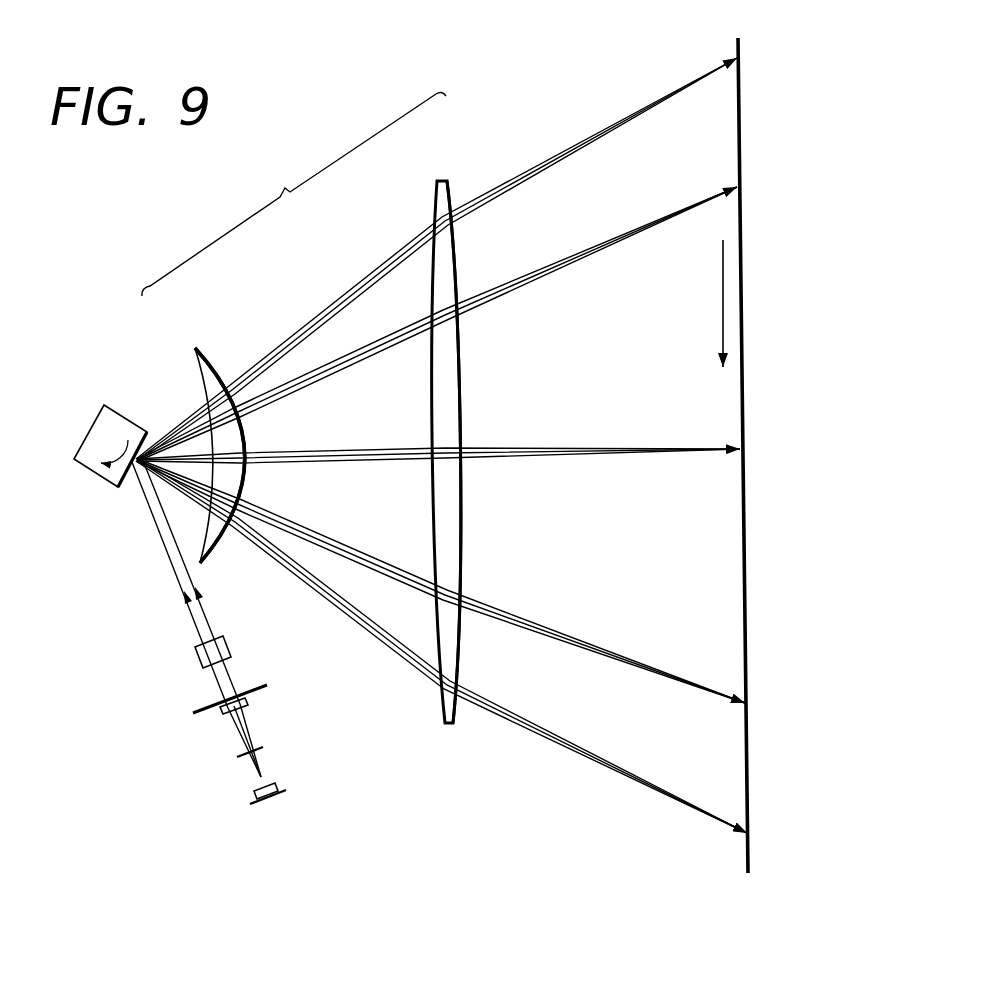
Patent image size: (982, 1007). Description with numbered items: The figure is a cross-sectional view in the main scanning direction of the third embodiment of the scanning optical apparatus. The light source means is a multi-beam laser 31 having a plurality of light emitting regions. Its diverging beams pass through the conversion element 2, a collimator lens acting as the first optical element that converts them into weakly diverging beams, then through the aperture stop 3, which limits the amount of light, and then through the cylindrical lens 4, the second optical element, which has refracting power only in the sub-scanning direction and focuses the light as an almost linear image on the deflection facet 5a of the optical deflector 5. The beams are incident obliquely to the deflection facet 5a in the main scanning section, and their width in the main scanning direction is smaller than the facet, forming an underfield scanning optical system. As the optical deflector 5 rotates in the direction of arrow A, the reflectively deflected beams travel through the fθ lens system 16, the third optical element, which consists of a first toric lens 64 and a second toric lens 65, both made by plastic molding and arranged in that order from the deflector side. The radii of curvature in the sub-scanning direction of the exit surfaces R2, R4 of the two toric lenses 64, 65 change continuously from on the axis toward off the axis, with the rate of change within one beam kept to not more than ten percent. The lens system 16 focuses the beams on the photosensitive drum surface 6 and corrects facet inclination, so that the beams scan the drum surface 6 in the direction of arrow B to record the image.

The conversion element (collimator lens) 2 is at (225, 712).
The aperture stop 3 is at (195, 716).
The cylindrical lens 4 is at (195, 658).
The optical deflector 5 is at (79, 462).
The deflection facet 5a is at (128, 492).
The surface to be scanned (photosensitive drum surface) 6 is at (748, 776).
The fθ lens system 16 is at (294, 194).
The multi-beam laser 31 is at (258, 805).
The first toric lens 64 is at (197, 346).
The second toric lens 65 is at (445, 726).
The rotation direction of optical deflector A is at (118, 484).
The main scanning direction B is at (722, 292).
The exit surface of first toric lens R2 is at (230, 528).
The exit surface of second toric lens R4 is at (462, 668).